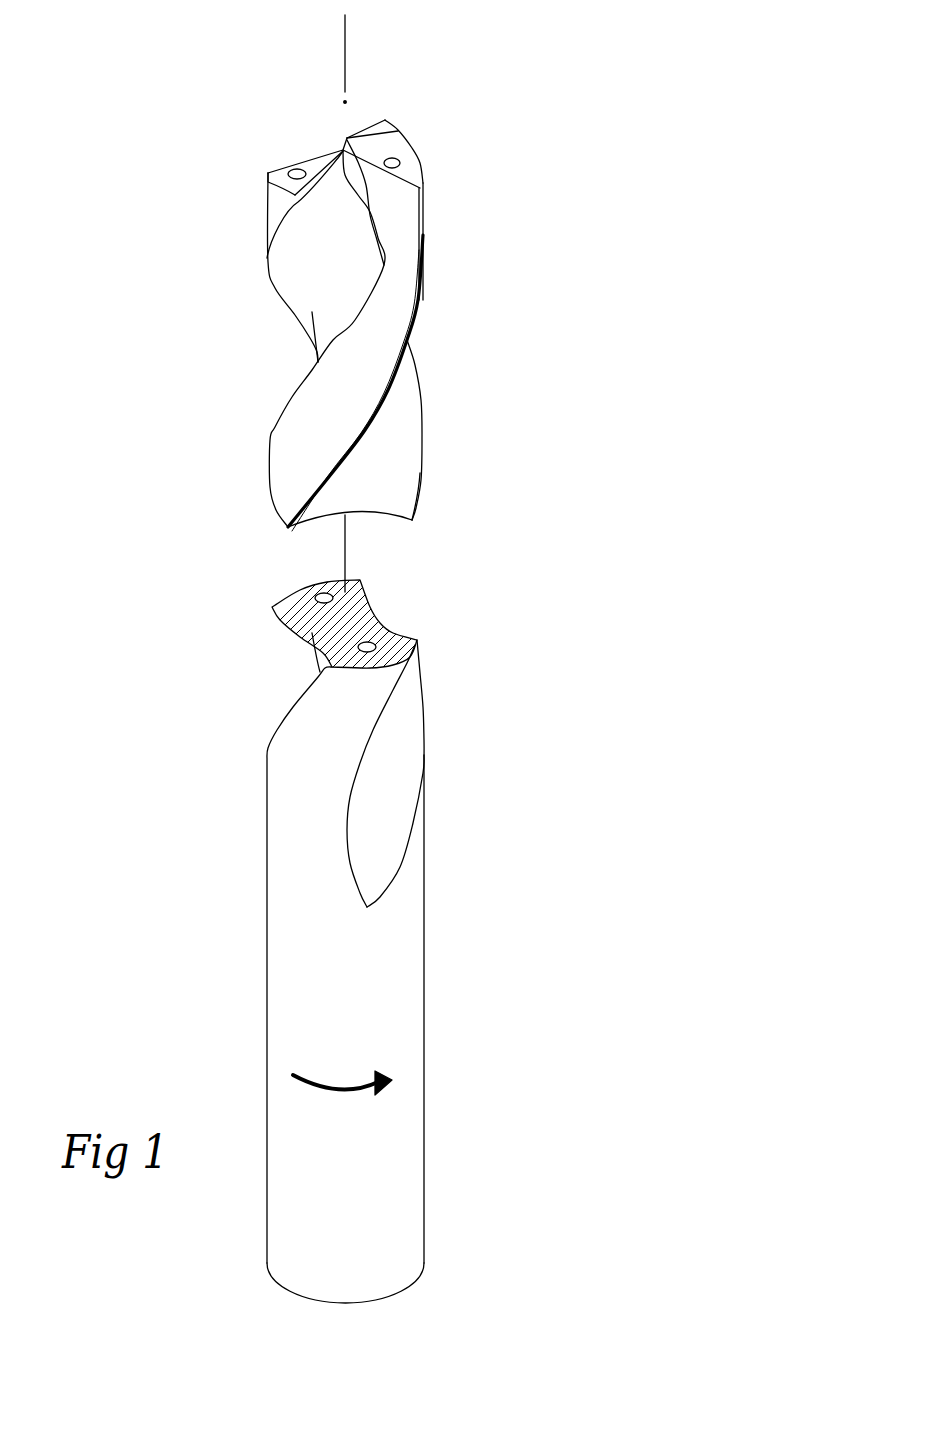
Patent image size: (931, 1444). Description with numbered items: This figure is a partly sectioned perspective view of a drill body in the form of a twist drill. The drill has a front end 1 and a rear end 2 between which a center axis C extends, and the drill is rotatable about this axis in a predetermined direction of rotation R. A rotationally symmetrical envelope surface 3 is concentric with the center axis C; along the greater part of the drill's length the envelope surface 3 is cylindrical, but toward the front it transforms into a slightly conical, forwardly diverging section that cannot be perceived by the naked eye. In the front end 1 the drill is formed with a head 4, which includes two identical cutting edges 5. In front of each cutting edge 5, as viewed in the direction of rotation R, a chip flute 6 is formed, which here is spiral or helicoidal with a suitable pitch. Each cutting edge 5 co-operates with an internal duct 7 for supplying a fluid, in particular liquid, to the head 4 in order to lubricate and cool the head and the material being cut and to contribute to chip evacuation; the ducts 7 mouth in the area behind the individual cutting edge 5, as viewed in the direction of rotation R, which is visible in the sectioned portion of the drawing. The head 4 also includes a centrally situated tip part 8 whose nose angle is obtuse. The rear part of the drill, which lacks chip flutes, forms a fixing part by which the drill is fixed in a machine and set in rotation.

The front end 1 is at (380, 657).
The rear end 2 is at (437, 1267).
The envelope surface 3 is at (352, 980).
The head 4 is at (348, 294).
The cutting edge 5 is at (354, 142).
The chip flute 6 is at (301, 293).
The internal duct 7 is at (297, 174).
The tip part 8 is at (337, 145).
The center axis C is at (346, 33).
The direction of rotation R is at (342, 1101).